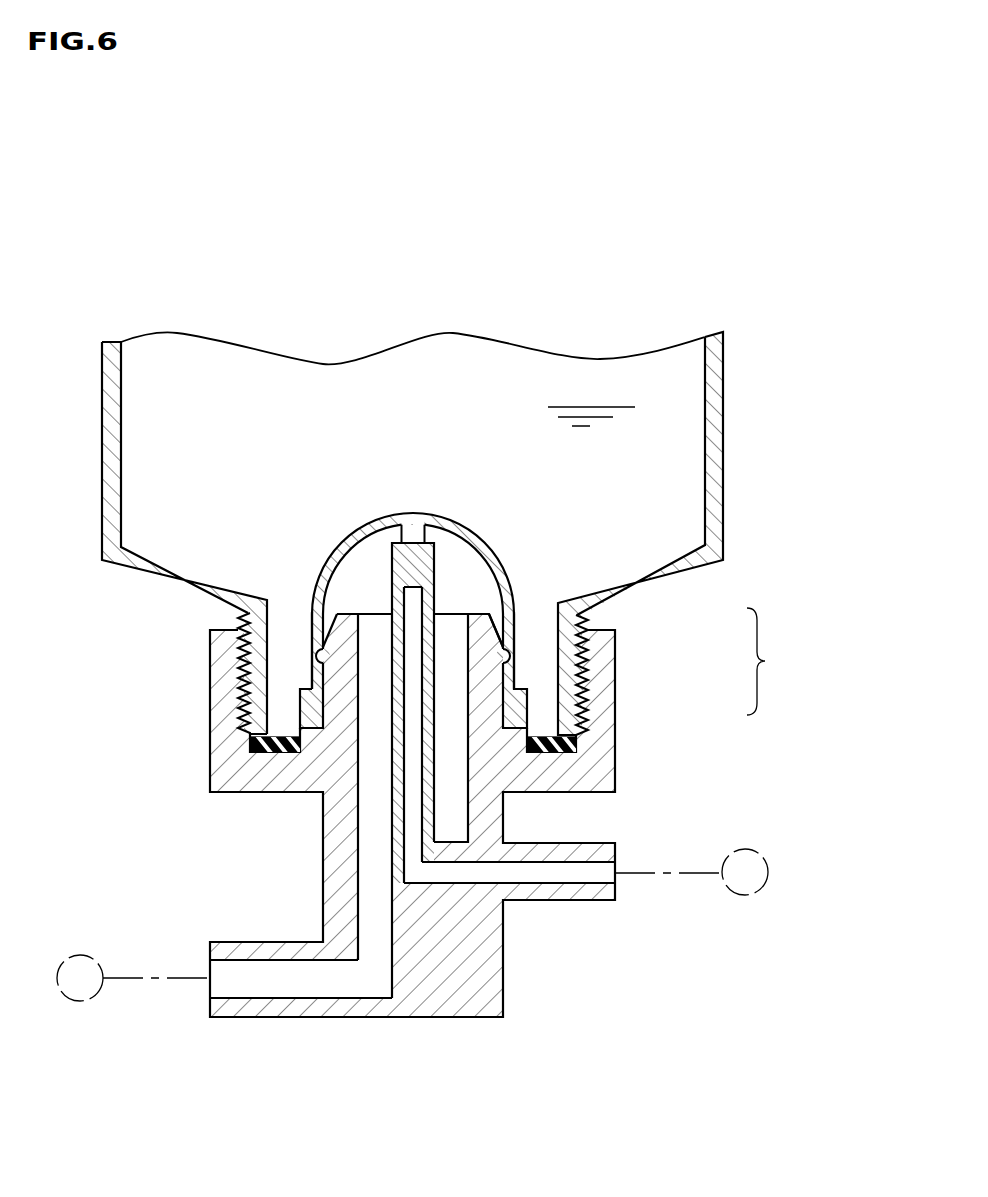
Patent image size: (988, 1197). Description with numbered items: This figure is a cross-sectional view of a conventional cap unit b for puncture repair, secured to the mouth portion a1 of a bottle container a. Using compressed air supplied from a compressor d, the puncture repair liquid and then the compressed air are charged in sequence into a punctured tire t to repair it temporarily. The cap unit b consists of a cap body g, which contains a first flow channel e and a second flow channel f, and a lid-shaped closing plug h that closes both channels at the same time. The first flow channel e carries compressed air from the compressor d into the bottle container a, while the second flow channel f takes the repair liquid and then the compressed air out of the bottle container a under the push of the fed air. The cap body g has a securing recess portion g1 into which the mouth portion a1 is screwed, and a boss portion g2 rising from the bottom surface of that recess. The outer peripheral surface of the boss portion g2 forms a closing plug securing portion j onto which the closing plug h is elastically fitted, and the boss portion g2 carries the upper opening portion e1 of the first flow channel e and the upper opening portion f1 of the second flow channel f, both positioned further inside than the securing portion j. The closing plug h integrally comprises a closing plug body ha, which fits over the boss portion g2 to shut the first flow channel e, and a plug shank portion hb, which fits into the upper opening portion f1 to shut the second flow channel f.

The bottle container a is at (723, 383).
The mouth portion a1 is at (267, 663).
The cap unit b is at (766, 661).
The compressor d is at (67, 1000).
The first flow channel e is at (245, 998).
The upper opening portion e1 is at (378, 612).
The second flow channel f is at (550, 880).
The upper opening portion f1 is at (412, 543).
The cap body g is at (620, 702).
The securing recess portion g1 is at (250, 710).
The boss portion g2 is at (343, 647).
The closing plug h is at (490, 538).
The closing plug body ha is at (317, 637).
The plug shank portion hb is at (415, 572).
The closing plug securing portion j is at (505, 712).
The tire t is at (755, 895).